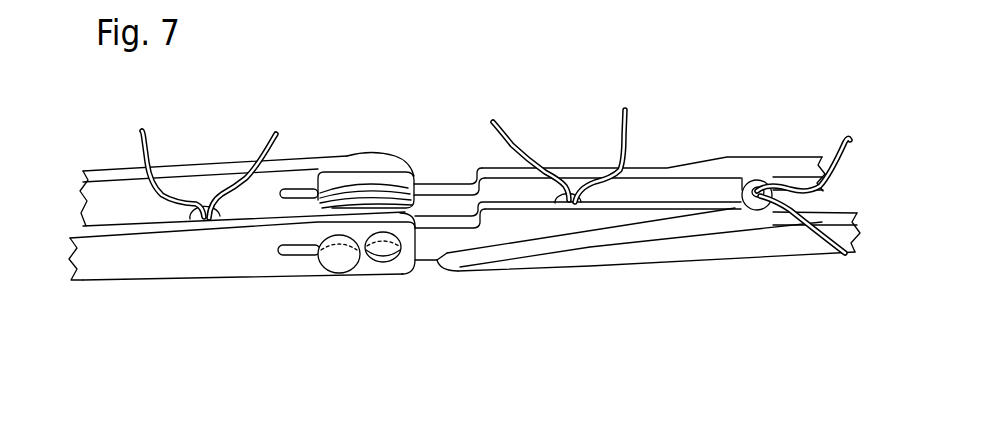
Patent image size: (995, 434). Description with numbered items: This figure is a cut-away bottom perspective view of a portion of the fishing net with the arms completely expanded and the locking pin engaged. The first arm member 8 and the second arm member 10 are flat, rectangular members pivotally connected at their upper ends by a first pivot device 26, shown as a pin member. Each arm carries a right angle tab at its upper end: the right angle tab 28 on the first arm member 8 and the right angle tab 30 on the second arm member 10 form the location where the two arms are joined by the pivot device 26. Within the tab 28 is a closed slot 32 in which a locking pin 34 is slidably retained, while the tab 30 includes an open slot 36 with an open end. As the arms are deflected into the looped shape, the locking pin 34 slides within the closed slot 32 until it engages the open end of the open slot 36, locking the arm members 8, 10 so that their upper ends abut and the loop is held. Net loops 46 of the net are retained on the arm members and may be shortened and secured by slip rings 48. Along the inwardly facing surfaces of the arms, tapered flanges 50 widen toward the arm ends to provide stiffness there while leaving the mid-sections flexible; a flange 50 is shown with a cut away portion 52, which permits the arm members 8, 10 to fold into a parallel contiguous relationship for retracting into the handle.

The first arm member 8 is at (100, 270).
The second arm member 10 is at (813, 246).
The first pivot device 26 is at (395, 258).
The right angle tab 28 is at (367, 266).
The right angle tab 30 is at (333, 180).
The closed slot 32 is at (303, 250).
The locking pin 34 is at (338, 268).
The open slot 36 is at (388, 192).
The net loop 46 is at (277, 134).
The slip ring 48 is at (222, 209).
The tapered flange 50 is at (103, 177).
The cut away portion 52 is at (522, 223).